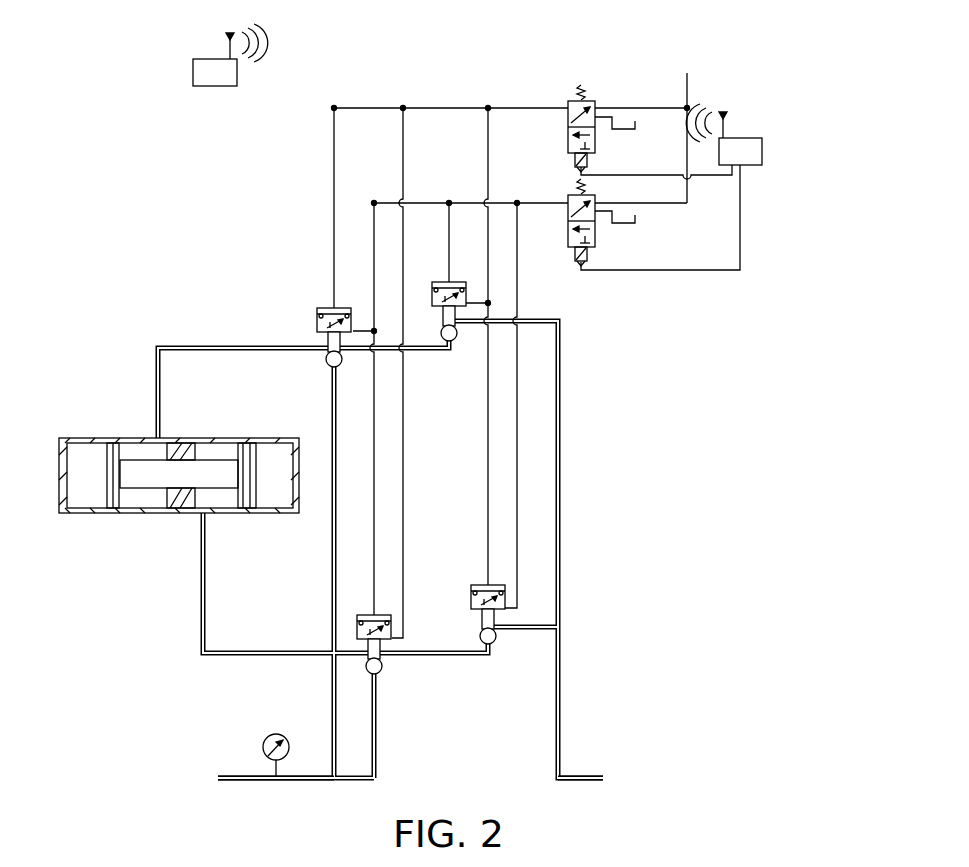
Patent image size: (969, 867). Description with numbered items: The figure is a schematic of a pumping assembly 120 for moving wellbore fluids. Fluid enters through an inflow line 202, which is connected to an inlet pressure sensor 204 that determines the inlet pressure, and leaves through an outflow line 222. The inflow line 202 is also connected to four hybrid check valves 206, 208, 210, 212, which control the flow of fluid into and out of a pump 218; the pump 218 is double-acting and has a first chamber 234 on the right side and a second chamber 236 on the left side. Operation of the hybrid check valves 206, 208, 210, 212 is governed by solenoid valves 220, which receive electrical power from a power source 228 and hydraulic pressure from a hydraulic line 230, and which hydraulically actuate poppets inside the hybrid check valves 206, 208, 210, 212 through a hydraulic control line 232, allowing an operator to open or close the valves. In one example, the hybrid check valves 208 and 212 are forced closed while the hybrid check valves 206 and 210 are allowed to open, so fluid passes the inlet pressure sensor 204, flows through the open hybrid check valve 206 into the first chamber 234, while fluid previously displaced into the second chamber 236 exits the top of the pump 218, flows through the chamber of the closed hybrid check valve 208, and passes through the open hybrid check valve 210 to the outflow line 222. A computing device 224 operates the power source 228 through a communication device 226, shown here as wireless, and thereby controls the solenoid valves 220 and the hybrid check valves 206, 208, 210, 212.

The pumping assembly 120 is at (172, 160).
The inflow line 202 is at (218, 778).
The inlet pressure sensor 204 is at (278, 733).
The hybrid check valve 206 is at (387, 614).
The hybrid check valve 208 is at (318, 313).
The hybrid check valve 210 is at (445, 281).
The hybrid check valve 212 is at (478, 584).
The pump 218 is at (179, 472).
The solenoid valves 220 is at (596, 140).
The outflow line 222 is at (603, 778).
The computing device 224 is at (205, 72).
The communication device 226 is at (728, 118).
The power source 228 is at (757, 156).
The hydraulic line 230 is at (690, 88).
The hydraulic control line 232 is at (437, 108).
The first chamber 234 is at (273, 500).
The second chamber 236 is at (95, 500).